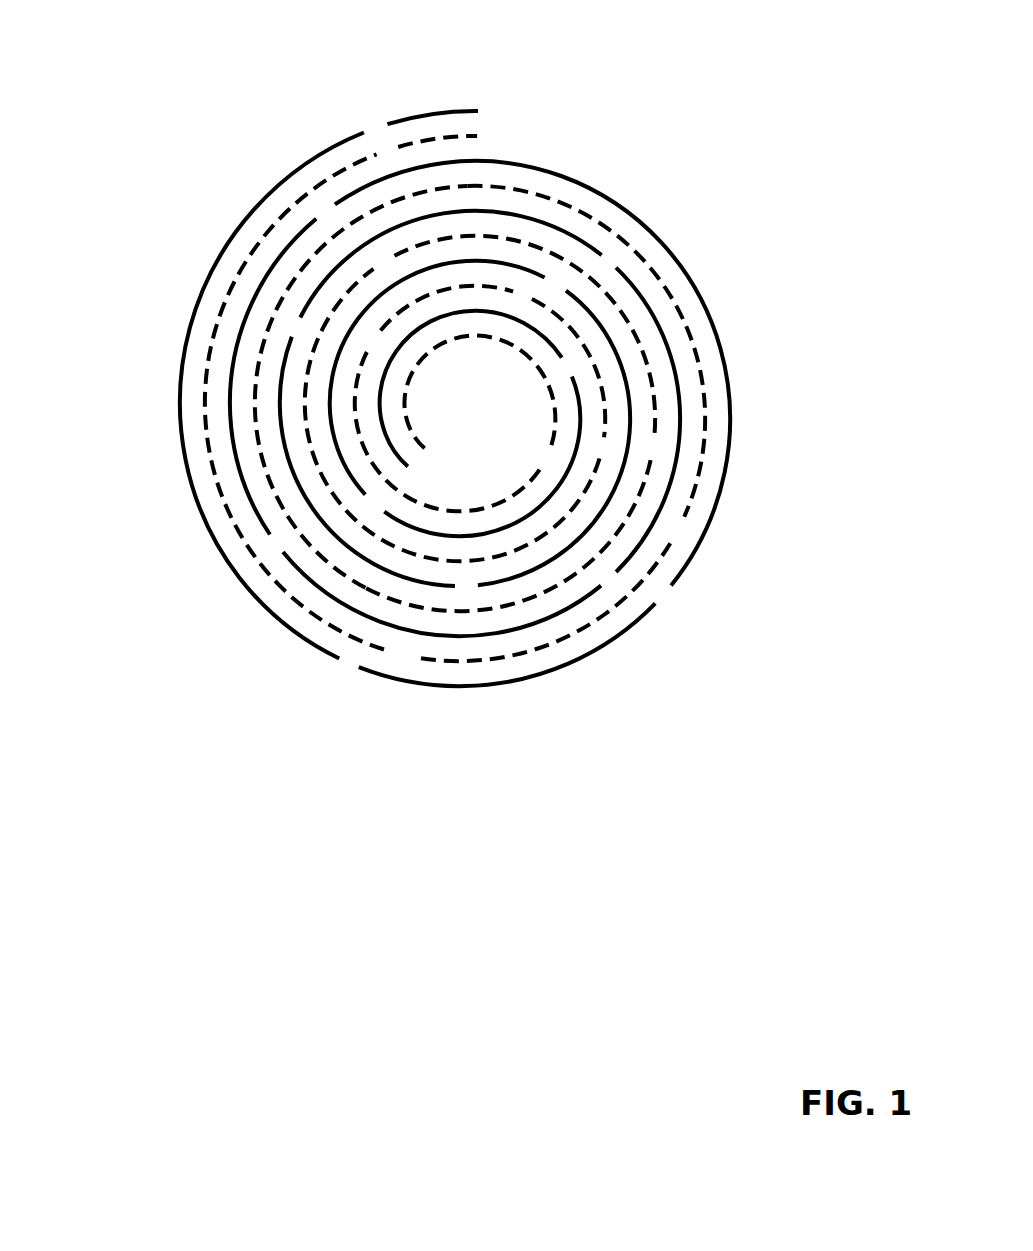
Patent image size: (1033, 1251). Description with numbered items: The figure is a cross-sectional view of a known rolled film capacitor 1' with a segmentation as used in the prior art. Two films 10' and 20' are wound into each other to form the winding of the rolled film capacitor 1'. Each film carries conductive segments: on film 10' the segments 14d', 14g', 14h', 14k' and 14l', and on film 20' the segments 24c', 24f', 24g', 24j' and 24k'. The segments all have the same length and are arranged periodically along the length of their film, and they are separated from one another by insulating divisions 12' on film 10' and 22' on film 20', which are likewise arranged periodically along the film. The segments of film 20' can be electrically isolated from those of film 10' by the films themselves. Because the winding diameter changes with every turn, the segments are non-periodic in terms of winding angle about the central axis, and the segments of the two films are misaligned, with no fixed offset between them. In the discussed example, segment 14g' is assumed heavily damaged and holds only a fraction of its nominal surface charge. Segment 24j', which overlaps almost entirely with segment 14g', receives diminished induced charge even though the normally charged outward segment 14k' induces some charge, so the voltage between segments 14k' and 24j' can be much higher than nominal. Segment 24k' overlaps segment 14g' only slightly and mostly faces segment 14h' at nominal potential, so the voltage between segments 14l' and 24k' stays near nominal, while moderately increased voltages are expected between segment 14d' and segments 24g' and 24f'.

The rolled film capacitor 1' is at (468, 411).
The film 10' is at (530, 414).
The insulating division 12' is at (277, 291).
The segment 14d' is at (613, 336).
The segment 14g' is at (748, 420).
The segment 14h' is at (442, 686).
The segment 14k' is at (575, 414).
The segment 14l' is at (507, 702).
The film 20' is at (513, 376).
The insulating division 22' is at (303, 356).
The segment 24c' is at (514, 178).
The segment 24f' is at (642, 340).
The segment 24g' is at (620, 535).
The segment 24j' is at (646, 349).
The segment 24k' is at (571, 647).